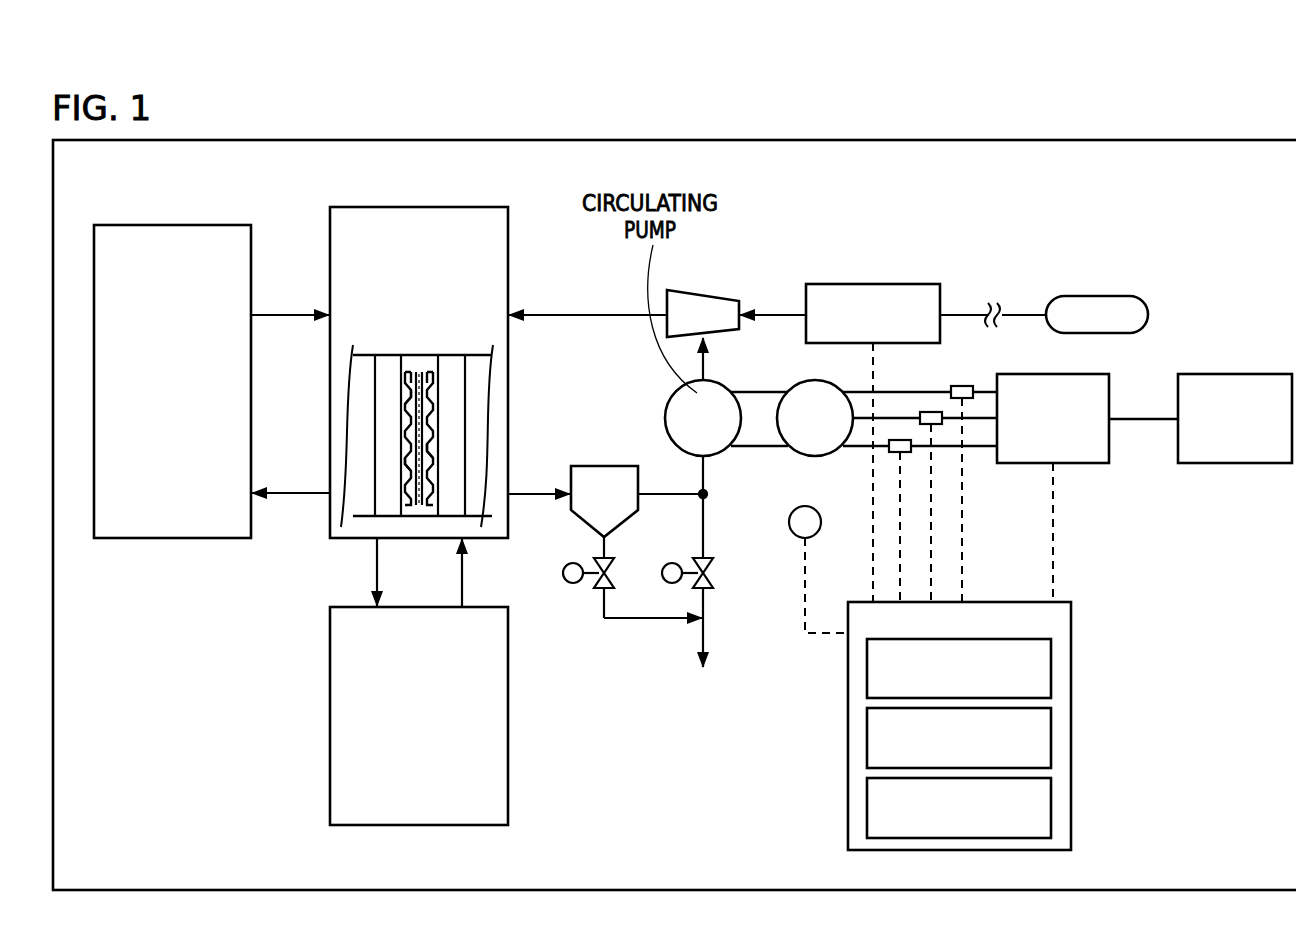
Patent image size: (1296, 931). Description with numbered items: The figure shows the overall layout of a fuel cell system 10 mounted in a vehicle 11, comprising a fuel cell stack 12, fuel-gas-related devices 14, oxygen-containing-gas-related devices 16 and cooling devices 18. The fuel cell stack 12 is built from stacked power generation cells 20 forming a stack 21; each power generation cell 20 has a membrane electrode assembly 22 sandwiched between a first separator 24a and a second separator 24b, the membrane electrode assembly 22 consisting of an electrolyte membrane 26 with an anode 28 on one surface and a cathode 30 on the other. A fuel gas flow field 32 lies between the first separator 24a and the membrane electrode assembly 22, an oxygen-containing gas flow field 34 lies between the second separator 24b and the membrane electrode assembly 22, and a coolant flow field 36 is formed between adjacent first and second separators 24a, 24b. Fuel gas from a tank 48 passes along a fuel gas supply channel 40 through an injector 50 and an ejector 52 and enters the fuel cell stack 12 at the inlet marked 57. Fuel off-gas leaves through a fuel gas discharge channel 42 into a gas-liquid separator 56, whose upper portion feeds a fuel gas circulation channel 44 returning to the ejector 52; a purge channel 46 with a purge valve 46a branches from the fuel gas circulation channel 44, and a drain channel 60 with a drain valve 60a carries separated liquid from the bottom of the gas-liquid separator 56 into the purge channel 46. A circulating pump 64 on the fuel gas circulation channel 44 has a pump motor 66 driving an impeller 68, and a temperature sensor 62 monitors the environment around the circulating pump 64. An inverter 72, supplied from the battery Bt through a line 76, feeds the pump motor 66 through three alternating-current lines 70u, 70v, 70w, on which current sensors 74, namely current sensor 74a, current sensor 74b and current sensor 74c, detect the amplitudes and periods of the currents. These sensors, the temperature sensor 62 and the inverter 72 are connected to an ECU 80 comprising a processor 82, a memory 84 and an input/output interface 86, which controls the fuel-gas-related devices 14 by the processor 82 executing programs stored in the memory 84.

The fuel cell system 10 is at (124, 195).
The vehicle 11 is at (308, 137).
The fuel cell stack 12 is at (320, 215).
The fuel-gas-related devices 14 is at (969, 258).
The oxygen-containing-gas-related devices 16 is at (159, 217).
The cooling devices 18 is at (312, 685).
The power generation cell 20 is at (414, 430).
The stack 21 is at (466, 518).
The membrane electrode assembly 22 is at (415, 387).
The first separator 24a is at (402, 410).
The second separator 24b is at (437, 407).
The electrolyte membrane 26 is at (419, 372).
The anode 28 is at (405, 375).
The cathode 30 is at (433, 375).
The fuel gas flow field 32 is at (402, 434).
The oxygen-containing gas flow field 34 is at (435, 433).
The coolant flow field 36 is at (407, 456).
The fuel gas supply channel 40 is at (572, 312).
The fuel gas discharge channel 42 is at (522, 497).
The fuel gas circulation channel 44 is at (710, 481).
The purge channel 46 is at (710, 532).
The purge valve 46a is at (715, 573).
The tank 48 is at (1085, 296).
The injector 50 is at (873, 284).
The ejector 52 is at (687, 289).
The gas-liquid separator 56 is at (608, 466).
The fuel gas inlet 57 is at (531, 297).
The drain channel 60 is at (636, 624).
The drain valve 60a is at (571, 584).
The temperature sensor 62 is at (815, 538).
The circulating pump 64 is at (697, 393).
The pump motor 66 is at (805, 383).
The impeller 68 is at (672, 414).
The line 70u is at (983, 391).
The line 70v is at (980, 421).
The line 70w is at (968, 449).
The inverter 72 is at (1090, 464).
The current sensors 74 is at (895, 434).
The current sensor 74a is at (956, 386).
The current sensor 74b is at (932, 412).
The current sensor 74c is at (891, 453).
The line 76 is at (1123, 418).
The battery Bt is at (1222, 374).
The ECU 80 is at (995, 726).
The processor 82 is at (1051, 670).
The memory 84 is at (1051, 737).
The input/output interface 86 is at (1051, 807).